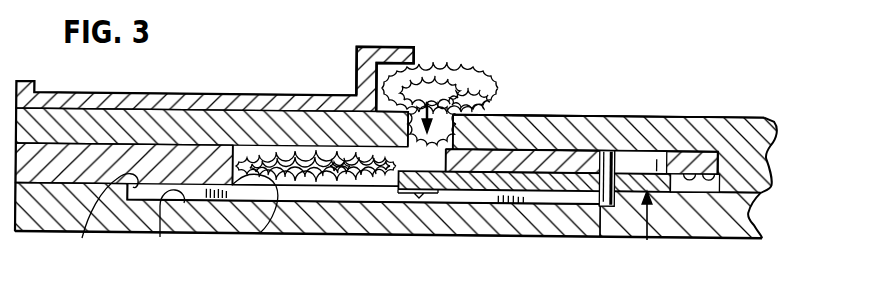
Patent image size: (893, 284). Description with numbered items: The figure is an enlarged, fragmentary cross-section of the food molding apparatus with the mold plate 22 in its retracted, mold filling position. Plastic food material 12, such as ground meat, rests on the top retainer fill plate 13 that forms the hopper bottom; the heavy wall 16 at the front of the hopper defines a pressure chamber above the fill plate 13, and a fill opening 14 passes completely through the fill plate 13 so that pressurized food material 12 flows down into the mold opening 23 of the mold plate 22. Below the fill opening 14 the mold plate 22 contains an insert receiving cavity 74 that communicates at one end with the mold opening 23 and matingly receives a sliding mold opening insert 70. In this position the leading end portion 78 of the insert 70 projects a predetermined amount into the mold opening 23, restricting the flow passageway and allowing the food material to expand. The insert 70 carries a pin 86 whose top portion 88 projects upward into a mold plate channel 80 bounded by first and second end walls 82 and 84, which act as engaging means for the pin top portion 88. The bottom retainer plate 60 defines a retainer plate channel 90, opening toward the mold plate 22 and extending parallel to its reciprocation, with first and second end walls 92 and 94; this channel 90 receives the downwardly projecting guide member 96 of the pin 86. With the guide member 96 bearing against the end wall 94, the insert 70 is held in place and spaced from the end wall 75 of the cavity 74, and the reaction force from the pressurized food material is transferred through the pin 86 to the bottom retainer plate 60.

The plastic food material 12 is at (440, 82).
The top retainer fill plate 13 is at (718, 117).
The fill opening 14 is at (455, 100).
The heavy wall 16 is at (372, 47).
The mold plate 22 is at (752, 239).
The mold opening 23 is at (260, 233).
The bottom retainer plate 60 is at (503, 222).
The mold opening insert 70 is at (647, 240).
The insert receiving cavity 74 is at (674, 171).
The end wall of insert receiving cavity 75 is at (763, 118).
The leading end portion 78 is at (414, 200).
The mold plate channel 80 is at (636, 158).
The first end wall 82 is at (553, 118).
The second end wall 84 is at (649, 157).
The pin 86 is at (586, 185).
The pin top portion 88 is at (603, 151).
The retainer plate channel 90 is at (166, 225).
The first end wall 92 is at (101, 217).
The second end wall 94 is at (613, 200).
The guide member 96 is at (602, 198).